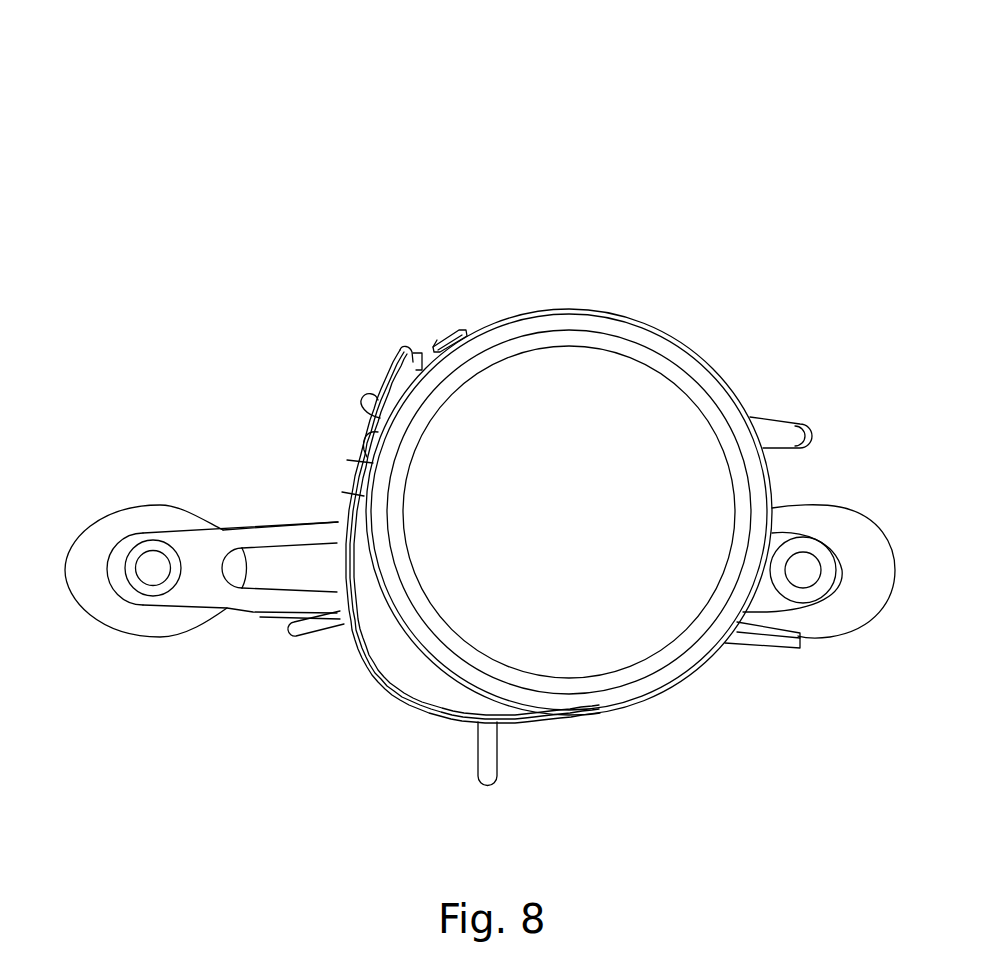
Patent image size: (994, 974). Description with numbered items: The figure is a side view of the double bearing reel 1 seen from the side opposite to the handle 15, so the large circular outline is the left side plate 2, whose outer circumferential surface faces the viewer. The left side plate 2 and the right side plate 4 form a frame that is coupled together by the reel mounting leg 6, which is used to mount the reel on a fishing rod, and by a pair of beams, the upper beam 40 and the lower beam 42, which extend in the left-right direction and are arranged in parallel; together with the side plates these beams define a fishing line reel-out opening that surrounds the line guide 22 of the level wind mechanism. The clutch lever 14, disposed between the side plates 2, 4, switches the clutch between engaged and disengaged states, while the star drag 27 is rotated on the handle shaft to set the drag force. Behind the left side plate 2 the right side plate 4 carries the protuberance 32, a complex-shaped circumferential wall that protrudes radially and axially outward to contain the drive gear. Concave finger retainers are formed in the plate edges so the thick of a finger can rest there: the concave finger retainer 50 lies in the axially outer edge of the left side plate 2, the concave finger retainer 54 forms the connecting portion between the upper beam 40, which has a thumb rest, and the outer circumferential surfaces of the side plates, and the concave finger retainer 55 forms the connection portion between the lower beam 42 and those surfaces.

The double bearing reel 1 is at (499, 172).
The left side plate 2 is at (603, 402).
The right side plate 4 is at (433, 718).
The reel mounting leg 6 is at (748, 650).
The clutch lever 14 is at (773, 432).
The handle 15 is at (258, 597).
The line guide 22 is at (400, 360).
The star drag 27 is at (488, 753).
The protuberance 32 is at (400, 663).
The upper beam 40 is at (437, 335).
The lower beam 42 is at (358, 460).
The concave finger retainer 50 is at (668, 348).
The concave finger retainer 54 is at (462, 330).
The concave finger retainer 55 is at (353, 493).